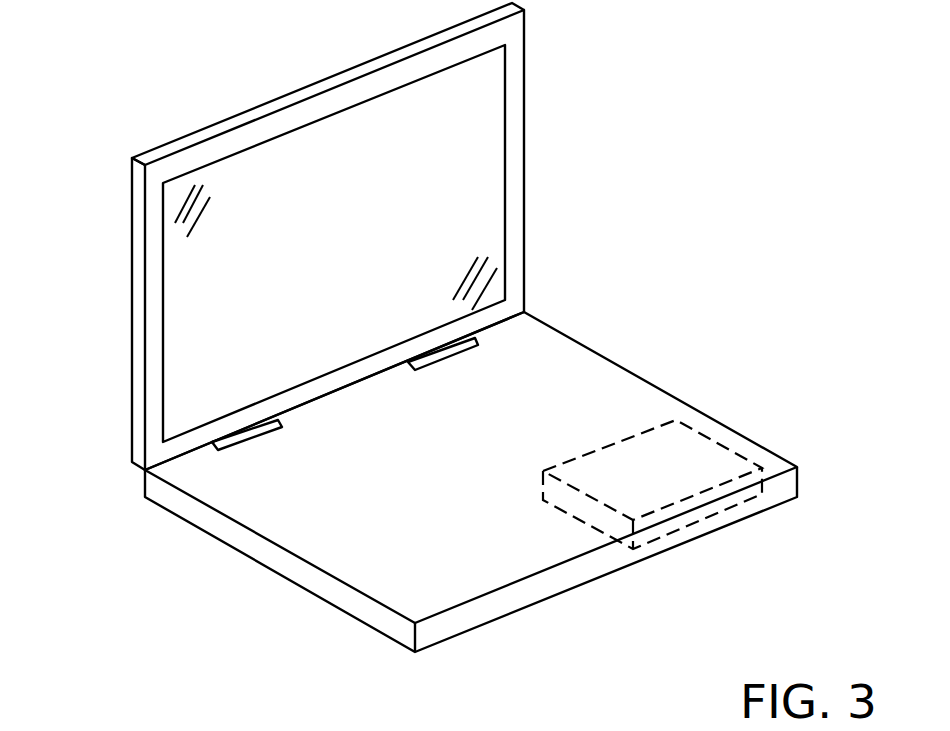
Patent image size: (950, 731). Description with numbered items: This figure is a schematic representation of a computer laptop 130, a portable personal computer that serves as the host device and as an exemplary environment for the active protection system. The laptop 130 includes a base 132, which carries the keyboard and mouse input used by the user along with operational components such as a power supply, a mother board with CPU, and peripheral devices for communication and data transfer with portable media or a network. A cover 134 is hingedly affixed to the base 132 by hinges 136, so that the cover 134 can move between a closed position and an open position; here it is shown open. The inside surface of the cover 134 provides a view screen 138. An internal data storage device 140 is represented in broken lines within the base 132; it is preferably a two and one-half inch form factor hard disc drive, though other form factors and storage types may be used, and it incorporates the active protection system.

The computer laptop 130 is at (430, 327).
The base 132 is at (277, 558).
The cover 134 is at (137, 295).
The hinges 136 is at (253, 437).
The view screen 138 is at (286, 212).
The internal data storage device 140 is at (673, 460).